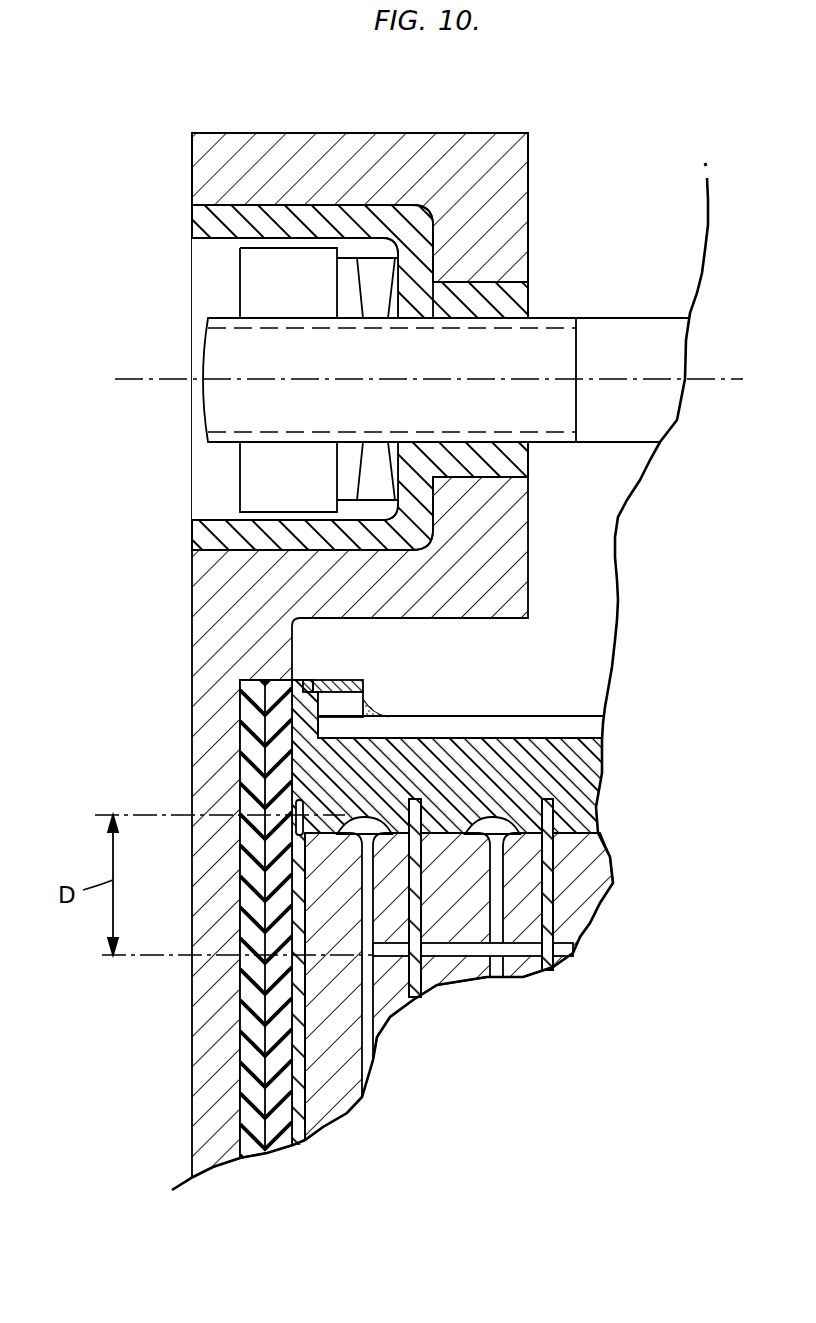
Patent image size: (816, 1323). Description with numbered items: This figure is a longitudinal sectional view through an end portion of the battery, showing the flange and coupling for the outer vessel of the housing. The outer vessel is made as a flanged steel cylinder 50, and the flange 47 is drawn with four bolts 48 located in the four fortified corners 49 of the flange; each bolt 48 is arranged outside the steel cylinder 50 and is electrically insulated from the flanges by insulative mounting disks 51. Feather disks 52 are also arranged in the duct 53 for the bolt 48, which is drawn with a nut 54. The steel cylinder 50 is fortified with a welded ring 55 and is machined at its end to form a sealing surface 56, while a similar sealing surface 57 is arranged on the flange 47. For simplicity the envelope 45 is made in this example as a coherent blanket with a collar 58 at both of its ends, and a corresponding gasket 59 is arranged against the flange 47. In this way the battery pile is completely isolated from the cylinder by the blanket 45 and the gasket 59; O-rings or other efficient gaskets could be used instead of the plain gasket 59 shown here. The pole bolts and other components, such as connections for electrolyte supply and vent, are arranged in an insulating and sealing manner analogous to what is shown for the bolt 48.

The envelope 45 is at (573, 778).
The flange 47 is at (212, 1105).
The bolt 48 is at (612, 320).
The fortified corner 49 is at (450, 145).
The steel cylinder 50 is at (575, 727).
The insulative mounting disk 51 is at (508, 297).
The feather disk 52 is at (377, 270).
The duct 53 is at (194, 271).
The nut 54 is at (255, 296).
The welded ring 55 is at (350, 703).
The sealing surface 56 is at (293, 707).
The sealing surface 57 is at (240, 723).
The collar 58 is at (313, 681).
The gasket 59 is at (270, 780).